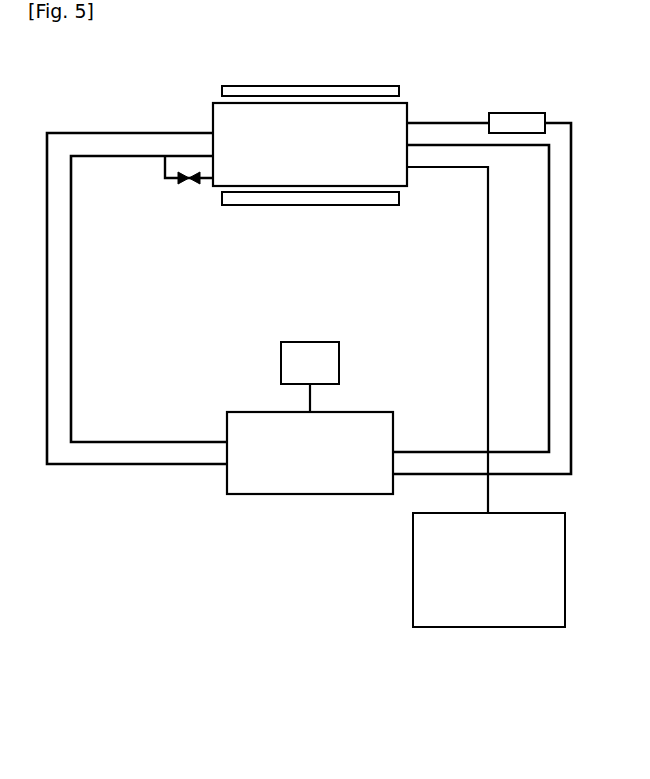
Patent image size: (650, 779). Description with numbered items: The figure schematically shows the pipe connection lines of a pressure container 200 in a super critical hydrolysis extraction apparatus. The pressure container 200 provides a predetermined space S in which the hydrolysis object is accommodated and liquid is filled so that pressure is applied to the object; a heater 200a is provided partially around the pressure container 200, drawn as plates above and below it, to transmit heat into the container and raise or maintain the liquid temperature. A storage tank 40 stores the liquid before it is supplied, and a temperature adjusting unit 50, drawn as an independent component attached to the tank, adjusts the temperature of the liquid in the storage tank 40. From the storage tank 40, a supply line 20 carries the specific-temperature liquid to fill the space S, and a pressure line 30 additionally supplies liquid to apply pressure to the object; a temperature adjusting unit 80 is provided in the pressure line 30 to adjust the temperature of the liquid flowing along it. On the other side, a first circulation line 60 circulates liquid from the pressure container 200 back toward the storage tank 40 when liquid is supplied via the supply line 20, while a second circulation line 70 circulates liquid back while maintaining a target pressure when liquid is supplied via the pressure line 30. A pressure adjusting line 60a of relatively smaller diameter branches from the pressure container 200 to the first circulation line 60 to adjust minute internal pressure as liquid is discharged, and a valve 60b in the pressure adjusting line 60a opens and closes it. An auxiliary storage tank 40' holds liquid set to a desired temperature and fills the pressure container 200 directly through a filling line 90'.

The second circulation line 70 is at (100, 132).
The first circulation line 60 is at (139, 155).
The pressure adjusting line 60a is at (165, 172).
The valve 60b is at (190, 186).
The pressure container 200 is at (212, 115).
The heater 200a is at (399, 197).
The space S is at (320, 130).
The temperature adjusting unit 80 is at (540, 113).
The pressure line 30 is at (573, 285).
The supply line 20 is at (551, 254).
The filling line 90' is at (447, 340).
The storage tank 40 is at (310, 481).
The temperature adjusting unit 50 is at (340, 362).
The auxiliary storage tank 40' is at (458, 570).